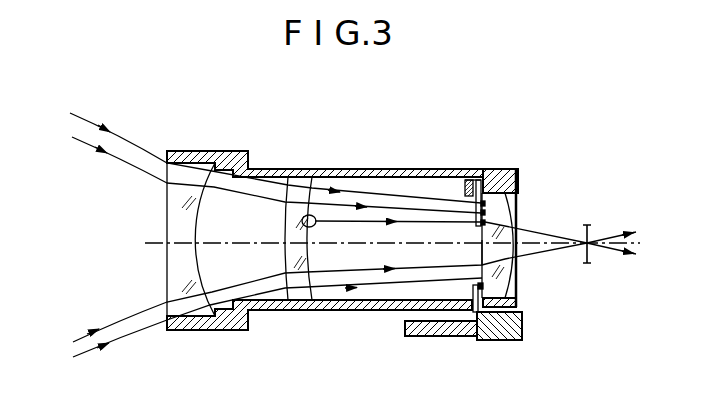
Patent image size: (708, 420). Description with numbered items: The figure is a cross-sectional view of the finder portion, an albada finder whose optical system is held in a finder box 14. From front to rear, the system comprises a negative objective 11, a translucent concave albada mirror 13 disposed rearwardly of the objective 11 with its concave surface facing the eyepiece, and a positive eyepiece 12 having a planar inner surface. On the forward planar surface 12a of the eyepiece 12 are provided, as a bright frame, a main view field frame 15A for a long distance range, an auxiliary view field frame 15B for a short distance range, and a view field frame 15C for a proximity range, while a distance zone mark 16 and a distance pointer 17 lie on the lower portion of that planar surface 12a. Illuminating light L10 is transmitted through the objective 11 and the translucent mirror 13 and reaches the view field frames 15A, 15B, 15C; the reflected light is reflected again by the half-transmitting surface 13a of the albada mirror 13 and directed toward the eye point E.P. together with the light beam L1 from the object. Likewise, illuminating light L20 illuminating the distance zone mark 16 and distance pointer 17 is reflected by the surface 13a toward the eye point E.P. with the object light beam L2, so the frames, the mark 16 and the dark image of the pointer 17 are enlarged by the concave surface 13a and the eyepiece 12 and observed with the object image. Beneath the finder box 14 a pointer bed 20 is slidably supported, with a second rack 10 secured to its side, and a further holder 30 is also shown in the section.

The second rack 10 is at (429, 336).
The negative objective 11 is at (197, 170).
The positive eyepiece 12 is at (493, 182).
The forward planar surface 12a is at (480, 252).
The albada mirror 13 is at (302, 186).
The half-transmitting surface 13a is at (302, 225).
The finder box 14 is at (281, 306).
The main view field frame 15A is at (486, 203).
The auxiliary view field frame 15B is at (486, 212).
The view field frame for proximity range 15C is at (486, 222).
The distance zone mark 16 is at (484, 286).
The distance pointer 17 is at (479, 309).
The pointer bed 20 is at (487, 340).
The display holder 30 is at (460, 178).
The light beam from the object L1 is at (72, 137).
The illuminating light L10 is at (82, 118).
The light beam from the object L2 is at (83, 333).
The illuminating light L20 is at (92, 352).
The eye point E.P. is at (588, 226).